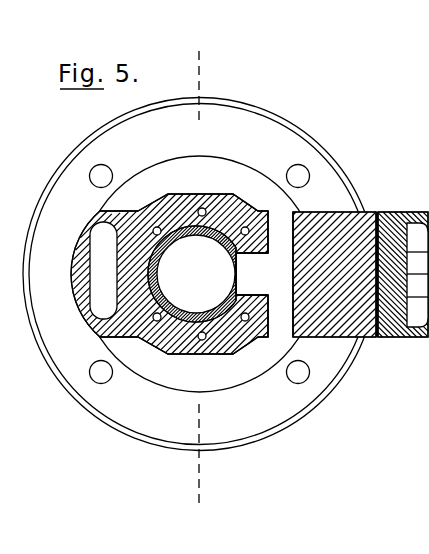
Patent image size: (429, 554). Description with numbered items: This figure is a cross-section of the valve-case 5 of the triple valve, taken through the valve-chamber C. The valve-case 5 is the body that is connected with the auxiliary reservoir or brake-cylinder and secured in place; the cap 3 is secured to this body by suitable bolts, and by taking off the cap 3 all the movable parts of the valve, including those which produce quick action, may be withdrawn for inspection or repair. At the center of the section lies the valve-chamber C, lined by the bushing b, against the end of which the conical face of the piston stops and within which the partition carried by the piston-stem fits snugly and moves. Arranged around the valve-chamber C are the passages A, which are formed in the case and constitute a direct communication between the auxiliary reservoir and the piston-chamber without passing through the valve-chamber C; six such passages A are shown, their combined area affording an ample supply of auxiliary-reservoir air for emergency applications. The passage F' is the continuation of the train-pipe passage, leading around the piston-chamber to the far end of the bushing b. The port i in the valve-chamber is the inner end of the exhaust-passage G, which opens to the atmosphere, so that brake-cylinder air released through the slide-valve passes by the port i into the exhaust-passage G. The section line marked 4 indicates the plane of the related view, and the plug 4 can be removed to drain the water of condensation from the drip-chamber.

The cap 3 is at (62, 168).
The plug 4 is at (199, 282).
The valve-case 5 is at (200, 274).
The passages A is at (156, 227).
The continuation of passage F F' is at (76, 270).
The valve-chamber C is at (196, 274).
The bushing b is at (170, 307).
The port i is at (242, 277).
The exhaust-passage G is at (280, 274).